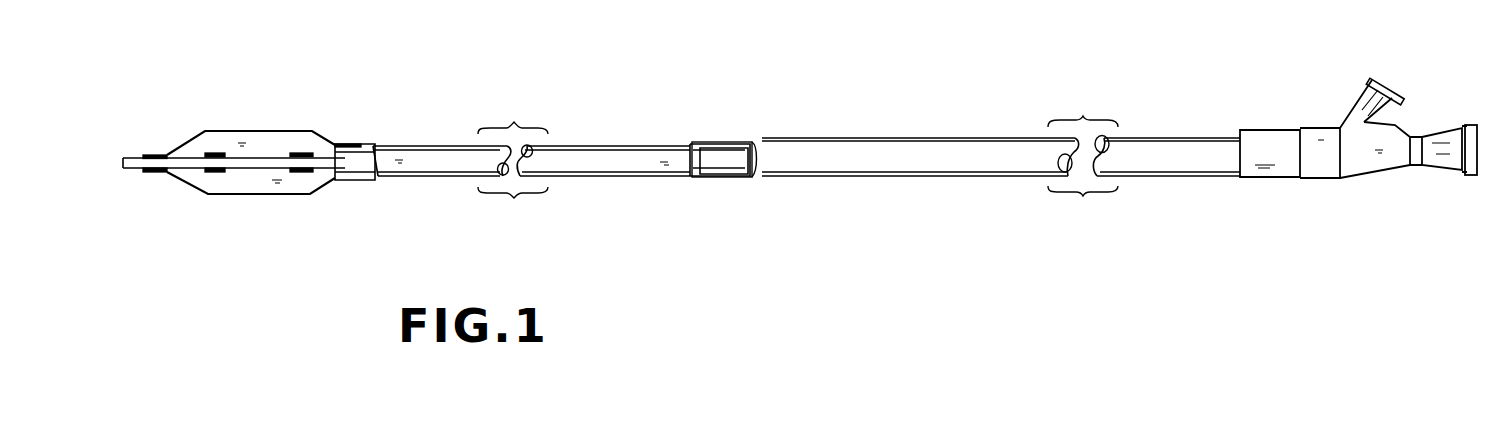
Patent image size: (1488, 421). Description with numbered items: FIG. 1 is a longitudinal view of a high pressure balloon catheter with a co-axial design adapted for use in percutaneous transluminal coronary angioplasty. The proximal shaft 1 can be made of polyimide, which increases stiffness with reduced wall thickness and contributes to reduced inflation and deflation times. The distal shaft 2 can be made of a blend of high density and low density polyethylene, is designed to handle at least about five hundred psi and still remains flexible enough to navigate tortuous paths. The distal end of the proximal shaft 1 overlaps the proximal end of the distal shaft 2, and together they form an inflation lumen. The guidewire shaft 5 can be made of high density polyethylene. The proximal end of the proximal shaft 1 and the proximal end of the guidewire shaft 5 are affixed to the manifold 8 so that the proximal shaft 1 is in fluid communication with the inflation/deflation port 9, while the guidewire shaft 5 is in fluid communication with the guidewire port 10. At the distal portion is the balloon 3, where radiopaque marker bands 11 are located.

The proximal shaft 1 is at (995, 138).
The distal shaft 2 is at (458, 145).
The balloon 3 is at (258, 195).
The guidewire shaft 5 is at (708, 152).
The manifold 8 is at (1275, 128).
The inflation/deflation port 9 is at (1393, 92).
The guidewire port 10 is at (1477, 183).
The marker bands 11 is at (208, 155).